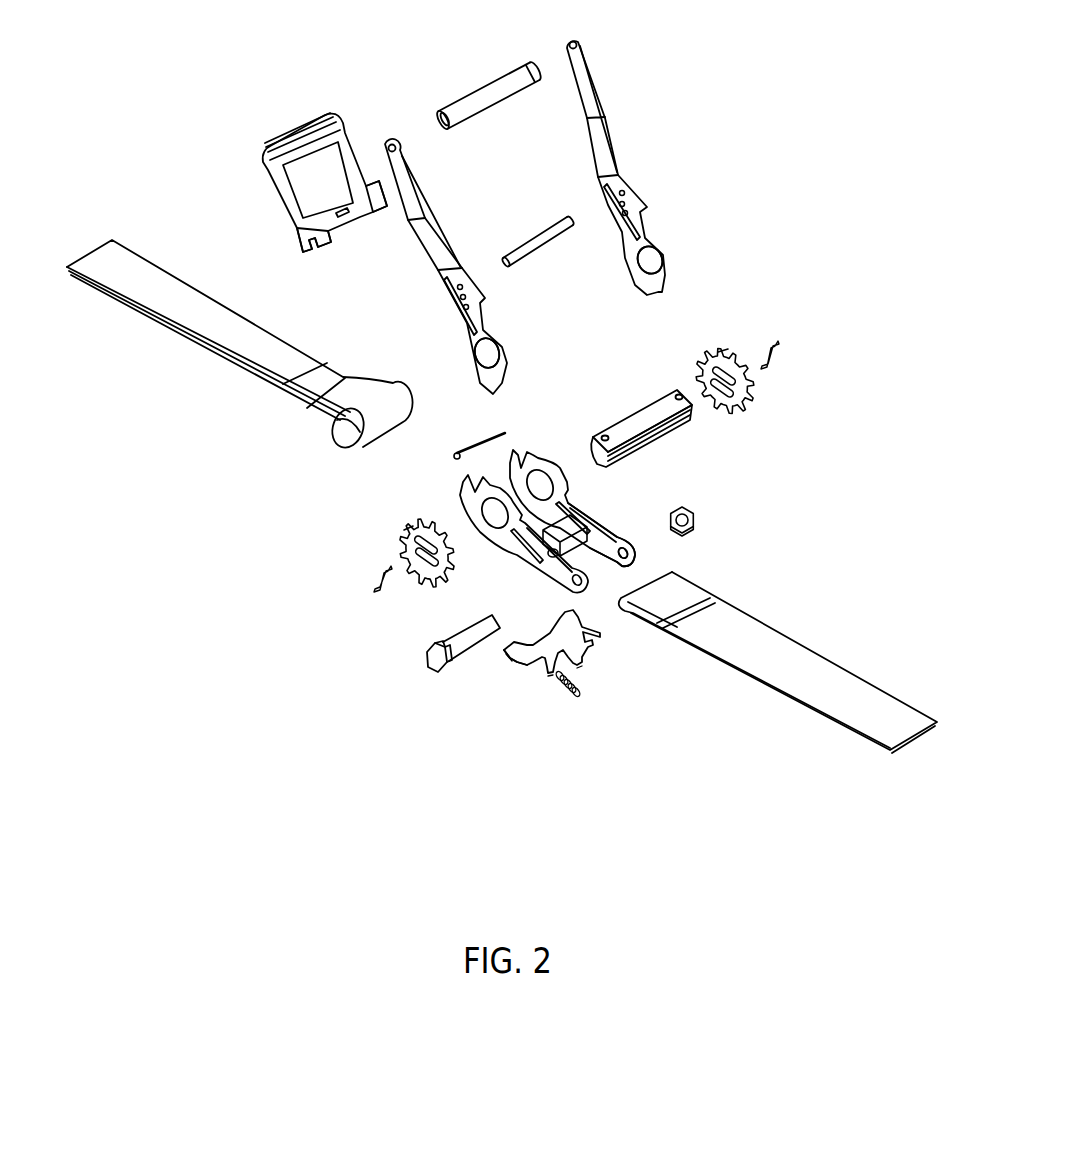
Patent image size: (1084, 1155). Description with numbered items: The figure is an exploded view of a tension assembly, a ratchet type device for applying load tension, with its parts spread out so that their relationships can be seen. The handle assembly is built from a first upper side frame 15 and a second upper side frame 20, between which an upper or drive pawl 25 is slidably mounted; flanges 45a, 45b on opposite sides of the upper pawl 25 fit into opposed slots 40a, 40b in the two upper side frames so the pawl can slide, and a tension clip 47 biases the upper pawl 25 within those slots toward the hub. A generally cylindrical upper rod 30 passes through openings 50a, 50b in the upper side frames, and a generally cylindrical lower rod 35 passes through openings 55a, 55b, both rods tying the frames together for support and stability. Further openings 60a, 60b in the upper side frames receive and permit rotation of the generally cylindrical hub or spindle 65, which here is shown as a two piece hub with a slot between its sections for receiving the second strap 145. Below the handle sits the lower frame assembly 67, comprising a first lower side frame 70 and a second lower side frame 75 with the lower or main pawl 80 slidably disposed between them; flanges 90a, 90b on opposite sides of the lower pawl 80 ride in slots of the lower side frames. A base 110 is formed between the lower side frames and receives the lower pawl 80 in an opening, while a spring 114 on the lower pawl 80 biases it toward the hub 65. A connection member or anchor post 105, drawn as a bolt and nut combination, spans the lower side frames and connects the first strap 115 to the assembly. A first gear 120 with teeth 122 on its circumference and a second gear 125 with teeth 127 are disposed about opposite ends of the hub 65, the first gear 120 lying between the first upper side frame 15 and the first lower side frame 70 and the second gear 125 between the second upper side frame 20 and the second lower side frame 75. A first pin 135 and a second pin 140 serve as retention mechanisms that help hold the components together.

The first upper side frame 15 is at (607, 157).
The second upper side frame 20 is at (415, 238).
The upper pawl 25 is at (244, 161).
The upper rod 30 is at (484, 93).
The lower rod 35 is at (527, 247).
The slot 40a is at (638, 228).
The slot 40b is at (466, 330).
The flange 45a is at (372, 191).
The flange 45b is at (305, 238).
The tension clip 47 is at (452, 452).
The opening 50a is at (578, 46).
The opening 50b is at (396, 149).
The opening 55a is at (627, 194).
The opening 55b is at (458, 290).
The opening 60a is at (650, 268).
The opening 60b is at (494, 392).
The hub 65 is at (647, 425).
The lower frame assembly 67 is at (547, 443).
The first lower side frame 70 is at (593, 530).
The second lower side frame 75 is at (500, 546).
The lower pawl 80 is at (550, 704).
The flange 90a is at (590, 631).
The flange 90b is at (530, 657).
The connection member 105 is at (463, 648).
The base 110 is at (564, 536).
The spring 114 is at (581, 697).
The first strap 115 is at (805, 666).
The first gear 120 is at (744, 404).
The teeth 122 is at (722, 351).
The second gear 125 is at (430, 577).
The teeth 127 is at (402, 528).
The first pin 135 is at (777, 341).
The second pin 140 is at (376, 573).
The second strap 145 is at (137, 296).